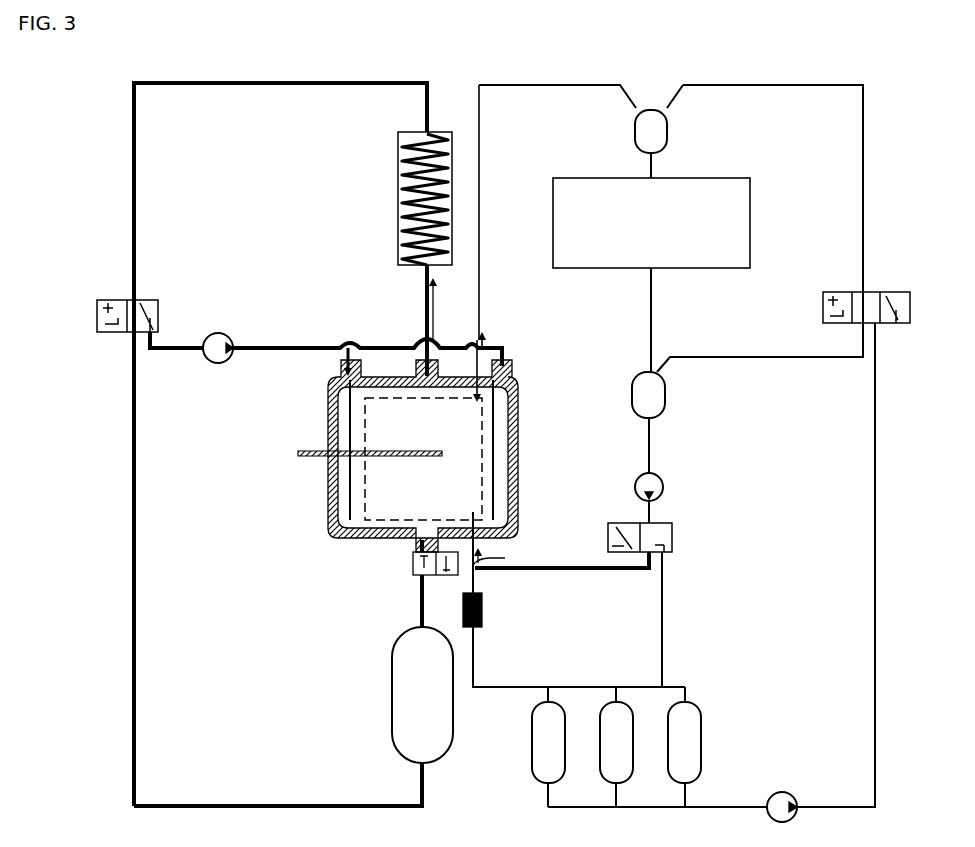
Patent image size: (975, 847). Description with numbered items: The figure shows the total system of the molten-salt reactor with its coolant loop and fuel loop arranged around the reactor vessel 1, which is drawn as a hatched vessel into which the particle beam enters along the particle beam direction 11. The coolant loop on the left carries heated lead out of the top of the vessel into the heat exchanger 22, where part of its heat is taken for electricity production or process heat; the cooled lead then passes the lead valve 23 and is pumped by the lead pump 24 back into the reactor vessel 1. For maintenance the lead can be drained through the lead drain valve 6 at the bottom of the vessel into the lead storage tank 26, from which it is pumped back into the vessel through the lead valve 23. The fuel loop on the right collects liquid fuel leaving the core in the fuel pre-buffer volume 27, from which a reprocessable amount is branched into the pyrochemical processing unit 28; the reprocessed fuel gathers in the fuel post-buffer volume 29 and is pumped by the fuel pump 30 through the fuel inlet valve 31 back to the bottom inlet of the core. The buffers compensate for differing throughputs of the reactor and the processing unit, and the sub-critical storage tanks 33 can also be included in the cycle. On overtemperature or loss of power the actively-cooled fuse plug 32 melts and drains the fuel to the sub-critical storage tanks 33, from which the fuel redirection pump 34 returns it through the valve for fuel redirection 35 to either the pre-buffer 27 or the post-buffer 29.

The reactor vessel 1 is at (432, 456).
The lead drain valve 6 is at (423, 567).
The particle beam direction 11 is at (300, 455).
The heat exchanger 22 is at (404, 198).
The lead valve 23 is at (138, 302).
The lead pump 24 is at (224, 332).
The lead storage tank 26 is at (397, 695).
The fuel pre-buffer volume 27 is at (629, 131).
The pyrochemical processing unit 28 is at (651, 223).
The fuel post-buffer volume 29 is at (627, 395).
The fuel pump 30 is at (670, 488).
The fuel inlet valve 31 is at (660, 538).
The fuse plug 32 is at (493, 610).
The sub-critical storage tanks 33 is at (637, 747).
The fuel redirection pump 34 is at (784, 790).
The valve for fuel redirection 35 is at (841, 310).